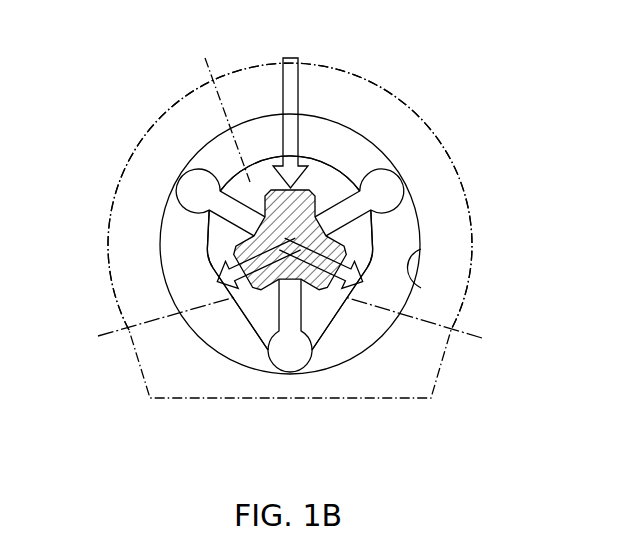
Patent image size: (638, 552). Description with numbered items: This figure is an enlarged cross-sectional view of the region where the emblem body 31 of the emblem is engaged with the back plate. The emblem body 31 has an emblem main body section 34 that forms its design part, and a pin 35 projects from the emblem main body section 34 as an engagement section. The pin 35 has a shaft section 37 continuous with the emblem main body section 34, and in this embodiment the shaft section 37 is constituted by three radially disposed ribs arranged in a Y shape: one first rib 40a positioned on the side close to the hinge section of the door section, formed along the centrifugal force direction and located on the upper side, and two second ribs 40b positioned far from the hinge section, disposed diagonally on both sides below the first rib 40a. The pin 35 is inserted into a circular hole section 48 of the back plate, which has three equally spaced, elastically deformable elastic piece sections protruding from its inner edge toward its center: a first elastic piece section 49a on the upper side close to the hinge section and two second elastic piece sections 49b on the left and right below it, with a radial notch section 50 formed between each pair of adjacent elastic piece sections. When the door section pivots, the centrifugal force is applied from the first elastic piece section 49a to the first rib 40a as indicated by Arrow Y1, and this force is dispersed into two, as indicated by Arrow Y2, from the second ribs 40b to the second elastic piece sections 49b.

The emblem body 31 is at (470, 294).
The emblem main body section 34 is at (160, 120).
The pin 35 is at (340, 176).
The shaft section 37 is at (200, 217).
The first rib 40a is at (330, 165).
The second rib 40b is at (227, 357).
The hole section 48 is at (421, 243).
The first elastic piece section 49a is at (220, 106).
The second elastic piece section 49b is at (293, 328).
The notch section 50 is at (203, 170).
The Arrow Y1 is at (300, 66).
The Arrow Y2 is at (208, 247).